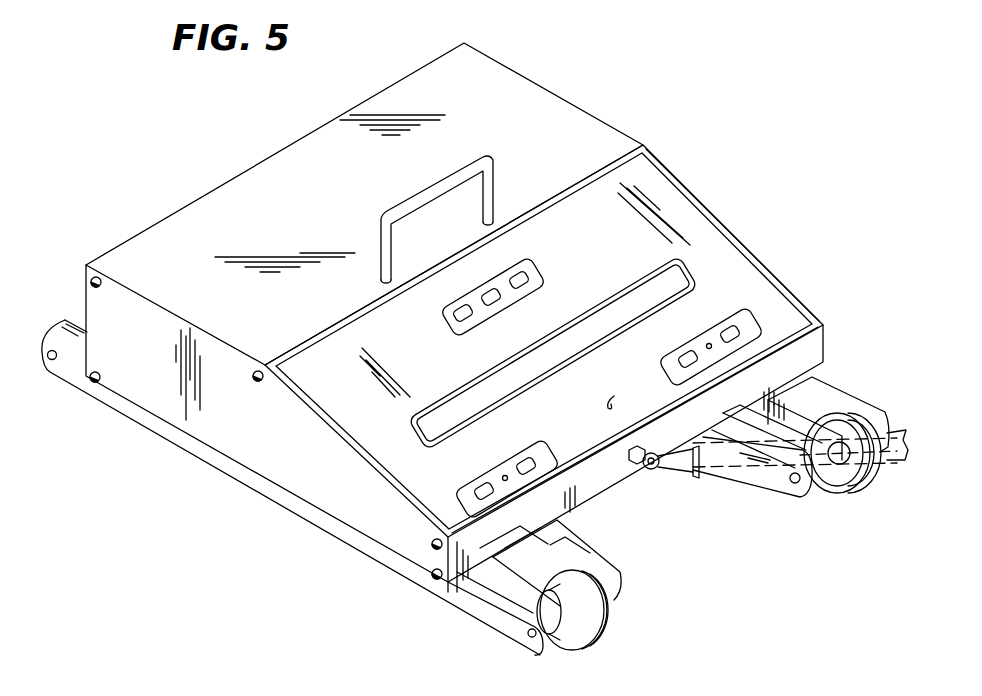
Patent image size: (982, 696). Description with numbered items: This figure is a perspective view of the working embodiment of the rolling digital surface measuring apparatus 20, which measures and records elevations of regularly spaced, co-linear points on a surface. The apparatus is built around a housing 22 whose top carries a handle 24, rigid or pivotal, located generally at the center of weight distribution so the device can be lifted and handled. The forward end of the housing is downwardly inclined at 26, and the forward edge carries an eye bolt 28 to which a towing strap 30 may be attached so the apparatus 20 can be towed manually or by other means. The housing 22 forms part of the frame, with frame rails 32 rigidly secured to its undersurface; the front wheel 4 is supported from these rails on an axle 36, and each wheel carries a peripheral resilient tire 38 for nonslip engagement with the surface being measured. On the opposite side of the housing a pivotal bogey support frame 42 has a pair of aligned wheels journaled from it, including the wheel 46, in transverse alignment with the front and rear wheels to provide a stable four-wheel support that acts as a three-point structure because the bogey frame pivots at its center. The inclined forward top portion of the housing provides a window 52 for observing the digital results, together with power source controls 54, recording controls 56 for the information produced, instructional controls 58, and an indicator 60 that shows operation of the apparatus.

The rolling digital surface measuring apparatus 20 is at (229, 173).
The housing 22 is at (547, 95).
The handle 24 is at (462, 176).
The downwardly inclined forward end 26 is at (703, 233).
The eye bolt 28 is at (646, 477).
The towing strap 30 is at (888, 468).
The frame rails 32 is at (292, 497).
The axle 36 is at (528, 636).
The resilient tire 38 is at (608, 631).
The bogey support frame 42 is at (845, 397).
The wheel 46 is at (836, 482).
The window 52 is at (648, 297).
The power source controls 54 is at (708, 327).
The recording controls 56 is at (462, 492).
The instructional controls 58 is at (534, 264).
The indicator 60 is at (614, 396).
The front wheel 4 is at (574, 646).